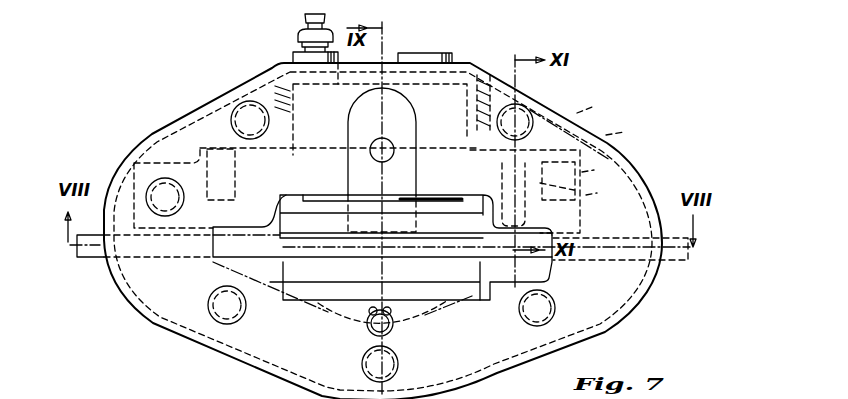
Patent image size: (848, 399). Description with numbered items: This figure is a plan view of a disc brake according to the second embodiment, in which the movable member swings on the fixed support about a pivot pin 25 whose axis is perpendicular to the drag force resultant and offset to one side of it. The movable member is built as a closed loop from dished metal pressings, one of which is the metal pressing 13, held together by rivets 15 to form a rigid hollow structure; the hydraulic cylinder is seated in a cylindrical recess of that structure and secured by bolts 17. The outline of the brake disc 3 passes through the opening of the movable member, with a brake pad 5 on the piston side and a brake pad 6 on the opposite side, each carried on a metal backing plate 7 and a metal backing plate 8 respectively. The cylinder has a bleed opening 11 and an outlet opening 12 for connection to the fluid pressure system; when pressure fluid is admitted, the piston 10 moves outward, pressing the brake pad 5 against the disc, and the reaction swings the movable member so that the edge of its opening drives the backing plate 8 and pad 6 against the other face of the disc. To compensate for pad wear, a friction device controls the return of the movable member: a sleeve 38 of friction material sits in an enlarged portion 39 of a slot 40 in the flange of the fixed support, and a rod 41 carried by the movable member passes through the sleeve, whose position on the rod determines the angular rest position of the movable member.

The brake disc 3 is at (219, 244).
The brake pad 5 is at (371, 220).
The brake pad 6 is at (312, 277).
The metal backing plate 7 is at (323, 207).
The metal backing plate 8 is at (473, 293).
The piston 10 is at (403, 198).
The bleed opening 11 is at (299, 38).
The outlet opening 12 is at (420, 57).
The dished metal pressing 13 is at (182, 143).
The rivets 15 is at (233, 312).
The bolts 17 is at (252, 122).
The pivot pin 25 is at (168, 202).
The sleeve of friction material 38 is at (579, 180).
The enlarged portion of slot 39 is at (604, 194).
The slot 40 is at (628, 134).
The rod 41 is at (597, 110).